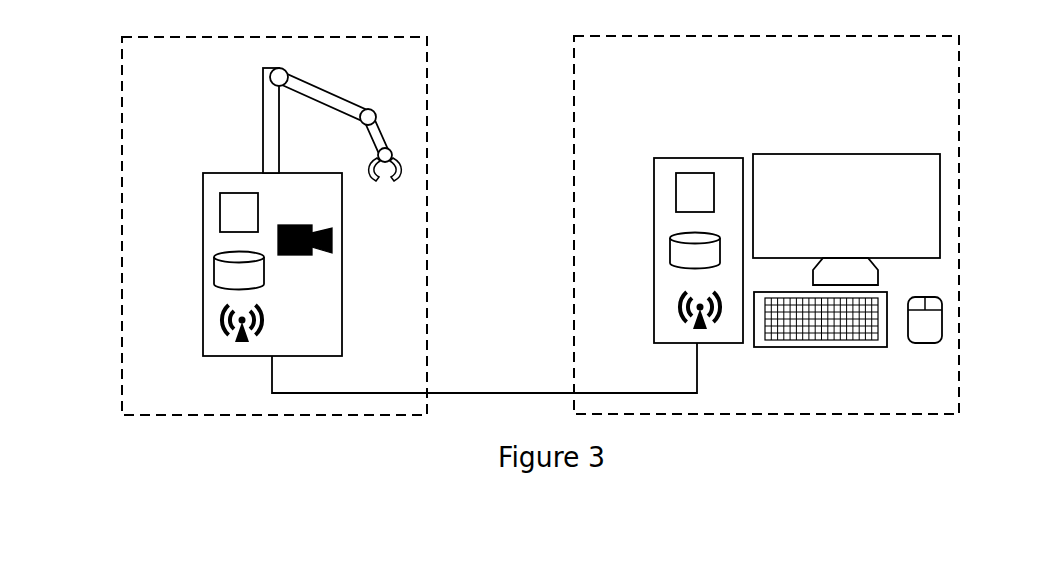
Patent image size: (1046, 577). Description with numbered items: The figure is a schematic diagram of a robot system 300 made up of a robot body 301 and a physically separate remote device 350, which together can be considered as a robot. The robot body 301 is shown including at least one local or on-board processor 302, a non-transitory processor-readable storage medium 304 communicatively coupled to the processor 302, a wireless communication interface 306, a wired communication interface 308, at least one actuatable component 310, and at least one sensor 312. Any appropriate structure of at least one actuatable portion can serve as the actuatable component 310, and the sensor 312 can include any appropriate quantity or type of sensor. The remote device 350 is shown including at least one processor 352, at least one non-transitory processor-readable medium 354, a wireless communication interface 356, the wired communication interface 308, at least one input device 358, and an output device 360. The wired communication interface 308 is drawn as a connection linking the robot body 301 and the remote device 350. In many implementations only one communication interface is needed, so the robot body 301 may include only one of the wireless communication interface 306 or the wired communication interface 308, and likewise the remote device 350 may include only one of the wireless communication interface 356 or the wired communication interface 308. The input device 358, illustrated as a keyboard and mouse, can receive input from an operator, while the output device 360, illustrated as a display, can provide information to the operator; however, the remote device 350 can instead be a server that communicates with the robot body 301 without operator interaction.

The robot system 300 is at (70, 91).
The robot body 301 is at (182, 80).
The local or on-board processor 302 is at (223, 210).
The non-transitory processor-readable storage medium 304 is at (215, 268).
The wireless communication interface 306 is at (241, 347).
The wired communication interface 308 is at (457, 393).
The actuatable component 310 is at (342, 92).
The sensor 312 is at (333, 242).
The remote device 350 is at (927, 80).
The processor 352 is at (677, 187).
The non-transitory processor-readable medium 354 is at (670, 245).
The wireless communication interface 356 is at (697, 328).
The input device 358 is at (950, 353).
The output device 360 is at (864, 220).